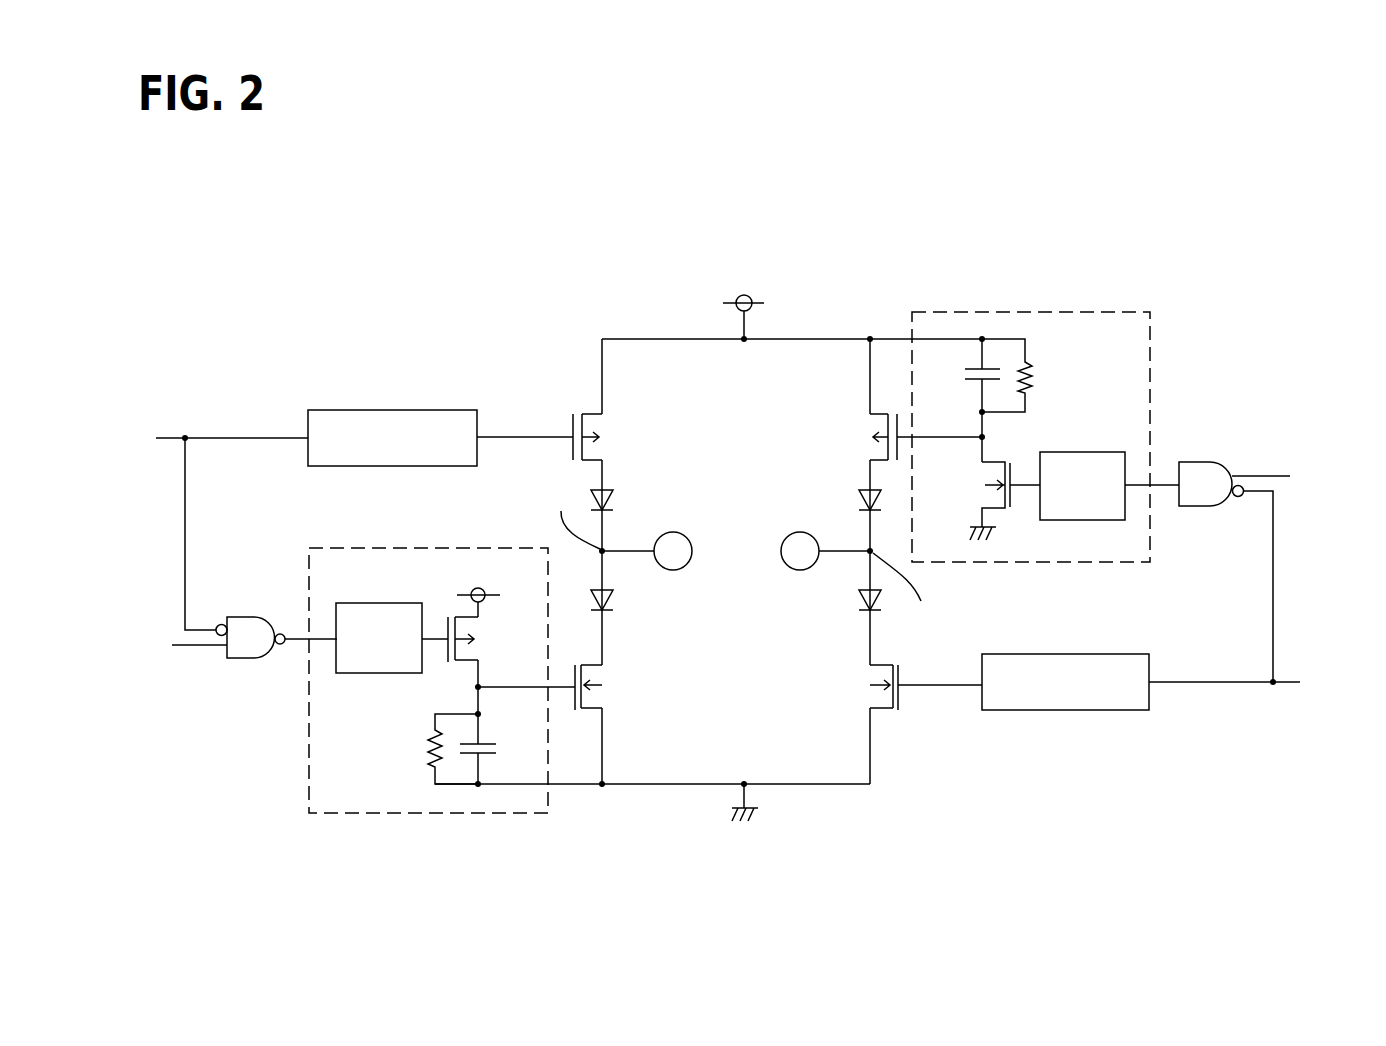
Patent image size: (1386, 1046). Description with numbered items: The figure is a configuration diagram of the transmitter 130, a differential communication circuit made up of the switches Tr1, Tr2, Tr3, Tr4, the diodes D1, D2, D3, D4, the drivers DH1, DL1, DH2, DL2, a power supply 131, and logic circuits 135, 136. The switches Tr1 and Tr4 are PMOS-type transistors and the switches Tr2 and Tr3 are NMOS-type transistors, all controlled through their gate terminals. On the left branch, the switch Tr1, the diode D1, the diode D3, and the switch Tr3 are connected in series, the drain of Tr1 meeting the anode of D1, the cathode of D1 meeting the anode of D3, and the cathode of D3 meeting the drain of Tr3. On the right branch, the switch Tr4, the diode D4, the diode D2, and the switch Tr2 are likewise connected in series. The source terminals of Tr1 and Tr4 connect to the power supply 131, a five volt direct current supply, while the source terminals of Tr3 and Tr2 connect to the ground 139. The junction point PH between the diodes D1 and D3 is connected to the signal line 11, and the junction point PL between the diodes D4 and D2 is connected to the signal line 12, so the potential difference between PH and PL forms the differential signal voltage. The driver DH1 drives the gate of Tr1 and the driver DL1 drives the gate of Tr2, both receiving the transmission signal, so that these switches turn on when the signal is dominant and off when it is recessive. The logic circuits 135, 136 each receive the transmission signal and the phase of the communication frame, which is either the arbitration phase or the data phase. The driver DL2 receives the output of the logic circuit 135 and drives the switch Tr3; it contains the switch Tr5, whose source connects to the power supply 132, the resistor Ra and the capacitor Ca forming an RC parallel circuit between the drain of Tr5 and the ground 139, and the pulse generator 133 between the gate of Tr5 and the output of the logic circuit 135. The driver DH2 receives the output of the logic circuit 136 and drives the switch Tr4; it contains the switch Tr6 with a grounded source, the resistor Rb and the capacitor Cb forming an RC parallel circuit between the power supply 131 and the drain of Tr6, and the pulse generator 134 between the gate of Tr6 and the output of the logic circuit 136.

The transmitter 130 is at (1246, 278).
The power supply 131 is at (750, 296).
The power supply 132 is at (485, 590).
The pulse generator 133 is at (382, 603).
The pulse generator 134 is at (1085, 452).
The logic circuit 135 is at (245, 617).
The logic circuit 136 is at (1218, 462).
The ground 139 is at (756, 808).
The signal line 11 is at (676, 531).
The signal line 12 is at (796, 531).
The switch Tr1 is at (604, 432).
The switch Tr2 is at (868, 688).
The switch Tr3 is at (604, 697).
The switch Tr4 is at (868, 437).
The switch Tr5 is at (480, 636).
The switch Tr6 is at (985, 482).
The diode D1 is at (616, 498).
The diode D2 is at (856, 597).
The diode D3 is at (616, 598).
The diode D4 is at (856, 497).
The resistor Ra is at (428, 750).
The capacitor Ca is at (488, 747).
The resistor Rb is at (1040, 372).
The capacitor Cb is at (968, 371).
The driver DH1 is at (400, 410).
The driver DH2 is at (1070, 312).
The driver DL1 is at (1086, 654).
The driver DL2 is at (432, 548).
The junction point PH is at (571, 516).
The junction point PL is at (916, 587).